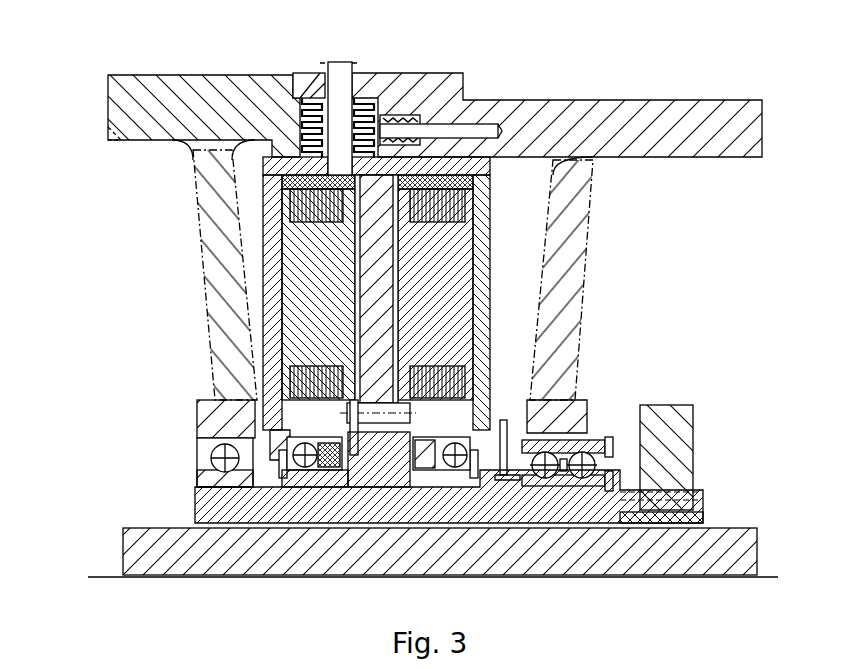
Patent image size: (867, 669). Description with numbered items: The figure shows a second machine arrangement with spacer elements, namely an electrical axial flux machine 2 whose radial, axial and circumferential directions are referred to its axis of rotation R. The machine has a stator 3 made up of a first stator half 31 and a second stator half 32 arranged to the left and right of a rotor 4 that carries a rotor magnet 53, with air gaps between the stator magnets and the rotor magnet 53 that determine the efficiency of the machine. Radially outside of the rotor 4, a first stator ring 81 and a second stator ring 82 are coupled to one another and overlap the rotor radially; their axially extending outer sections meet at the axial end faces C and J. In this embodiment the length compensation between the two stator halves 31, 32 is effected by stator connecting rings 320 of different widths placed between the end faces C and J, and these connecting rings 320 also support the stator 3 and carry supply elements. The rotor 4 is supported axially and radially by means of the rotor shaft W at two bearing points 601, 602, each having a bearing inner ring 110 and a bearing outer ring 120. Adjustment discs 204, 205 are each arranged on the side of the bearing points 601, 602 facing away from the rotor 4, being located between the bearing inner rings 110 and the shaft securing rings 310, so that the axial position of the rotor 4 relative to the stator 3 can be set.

The electrical axial flux machine 2 is at (78, 111).
The axial end face J is at (297, 125).
The stator connecting ring 320 is at (408, 95).
The rotor 4 is at (473, 130).
The axial end face C is at (497, 108).
The second stator ring 82 is at (270, 245).
The first stator ring 81 is at (547, 233).
The stator 3 is at (480, 310).
The second stator half 32 is at (307, 306).
The first stator half 31 is at (545, 268).
The rotor magnet 53 is at (367, 288).
The bearing outer ring 120 is at (283, 447).
The bearing point 602 is at (255, 416).
The shaft securing ring 310 is at (200, 438).
The bearing point 601 is at (550, 442).
The bearing inner ring 110 is at (330, 472).
The adjustment disc 204 is at (540, 526).
The adjustment disc 205 is at (263, 526).
The rotor shaft W is at (158, 566).
The axis of rotation R is at (765, 570).